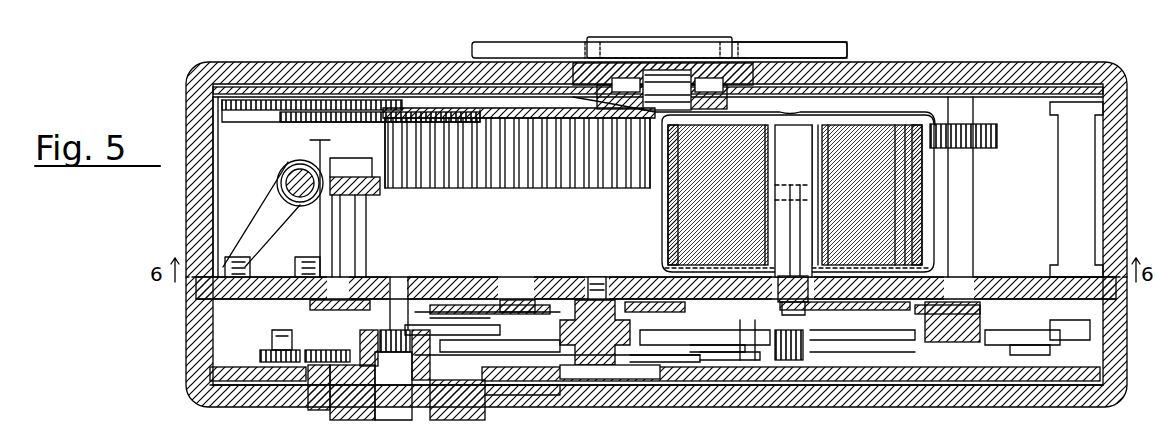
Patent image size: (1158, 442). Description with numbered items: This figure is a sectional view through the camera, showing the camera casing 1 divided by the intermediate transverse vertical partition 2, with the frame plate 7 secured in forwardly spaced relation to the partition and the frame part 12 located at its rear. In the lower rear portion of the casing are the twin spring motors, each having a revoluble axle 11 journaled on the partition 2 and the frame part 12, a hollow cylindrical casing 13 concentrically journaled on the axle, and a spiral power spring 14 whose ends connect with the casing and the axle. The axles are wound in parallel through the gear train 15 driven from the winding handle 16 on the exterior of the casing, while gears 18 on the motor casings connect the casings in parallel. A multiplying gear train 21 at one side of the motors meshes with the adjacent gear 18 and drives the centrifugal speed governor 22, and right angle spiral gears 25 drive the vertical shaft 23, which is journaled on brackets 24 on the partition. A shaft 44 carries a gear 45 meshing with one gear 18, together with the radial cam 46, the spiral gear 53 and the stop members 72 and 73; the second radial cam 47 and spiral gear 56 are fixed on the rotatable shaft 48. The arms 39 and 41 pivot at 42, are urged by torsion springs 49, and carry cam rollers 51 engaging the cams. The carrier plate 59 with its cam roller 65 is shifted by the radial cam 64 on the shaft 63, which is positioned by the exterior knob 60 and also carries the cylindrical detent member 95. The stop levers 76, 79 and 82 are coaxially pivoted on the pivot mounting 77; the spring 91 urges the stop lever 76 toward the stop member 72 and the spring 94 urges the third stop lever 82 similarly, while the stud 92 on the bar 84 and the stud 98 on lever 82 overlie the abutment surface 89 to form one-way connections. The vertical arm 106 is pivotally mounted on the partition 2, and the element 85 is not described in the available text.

The camera casing 1 is at (186, 82).
The intermediate transverse vertical partition 2 is at (196, 290).
The frame plate 7 is at (212, 372).
The revoluble axle 11 is at (830, 113).
The frame part 12 is at (1003, 93).
The hollow cylindrical casing 13 is at (903, 213).
The spiral power spring 14 is at (905, 192).
The gear train 15 is at (470, 90).
The winding handle 16 is at (835, 47).
The gear 18 is at (559, 175).
The multiplying gear train 21 is at (357, 96).
The centrifugal speed governor 22 is at (370, 208).
The vertical shaft 23 is at (283, 183).
The bracket 24 is at (240, 237).
The right angle spiral gear 25 is at (300, 200).
The arm 39 is at (398, 290).
The arm 41 is at (783, 276).
The pivot 42 is at (475, 305).
The shaft 44 is at (968, 216).
The gear 45 is at (997, 135).
The radial cam 46 is at (1020, 300).
The second radial cam 47 is at (655, 302).
The rotatable shaft 48 is at (598, 280).
The torsion spring 49 is at (510, 300).
The cam roller 51 is at (797, 276).
The spiral gear 53 is at (1085, 338).
The spiral gear 56 is at (700, 345).
The carrier plate 59 is at (552, 372).
The knob 60 is at (487, 412).
The shaft 63 is at (396, 406).
The radial cam 64 is at (455, 402).
The cam roller 65 is at (522, 382).
The stop member 72 is at (1003, 348).
The stop member 73 is at (1033, 357).
The stop lever 76 is at (715, 355).
The pivot mounting 77 is at (705, 360).
The second stop lever 79 is at (755, 345).
The third stop lever 82 is at (668, 362).
The bar 84 is at (333, 400).
The contact 85 is at (290, 380).
The abutment surface 89 is at (318, 375).
The spring 91 is at (265, 337).
The stud 92 is at (358, 335).
The spring 94 is at (792, 362).
The cylindrical detent member 95 is at (422, 398).
The stud 98 is at (360, 405).
The vertical arm 106 is at (335, 277).